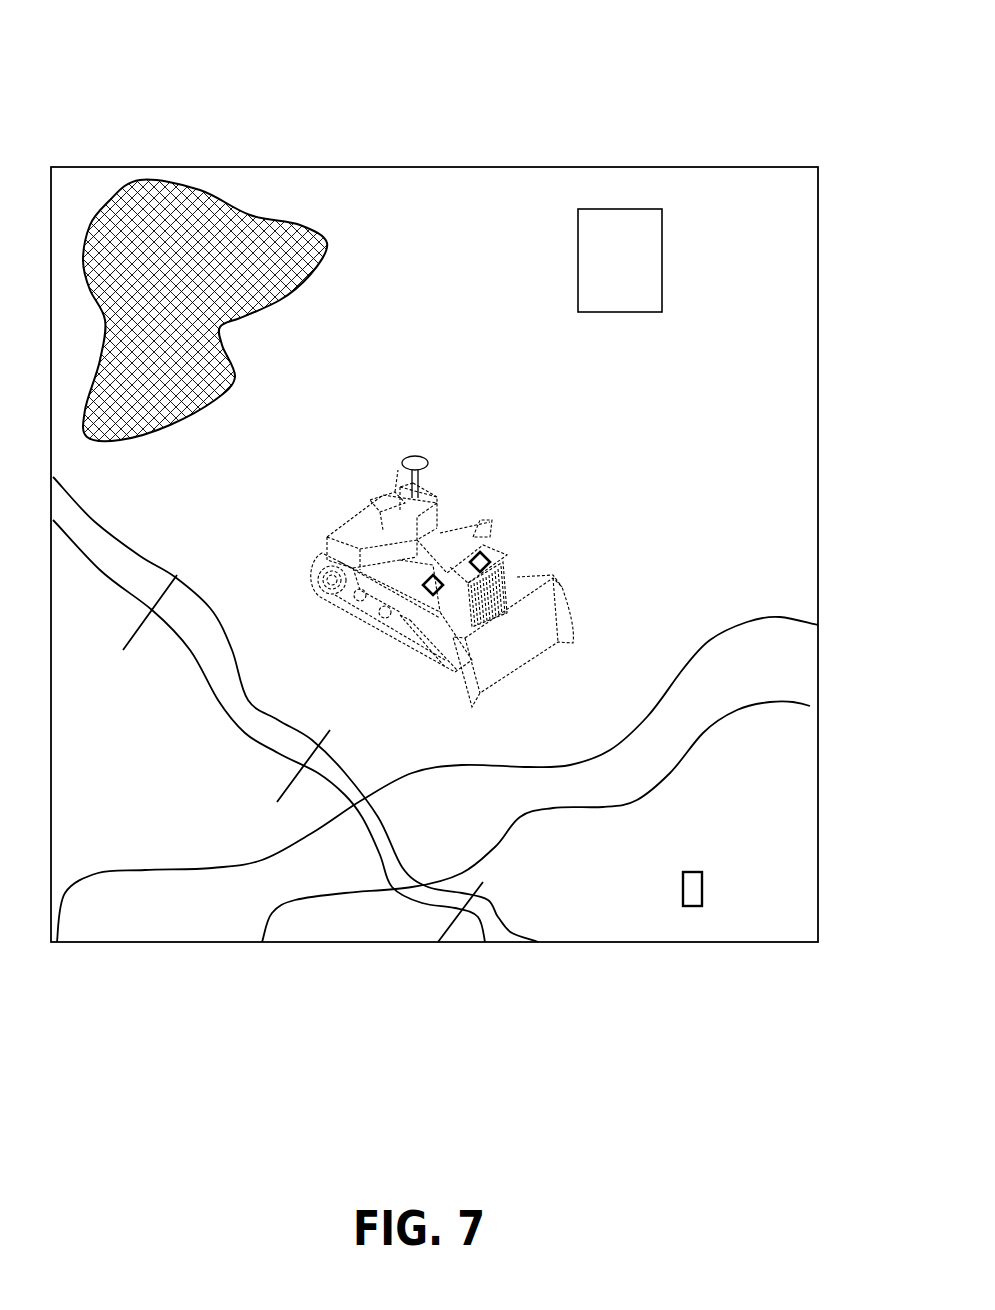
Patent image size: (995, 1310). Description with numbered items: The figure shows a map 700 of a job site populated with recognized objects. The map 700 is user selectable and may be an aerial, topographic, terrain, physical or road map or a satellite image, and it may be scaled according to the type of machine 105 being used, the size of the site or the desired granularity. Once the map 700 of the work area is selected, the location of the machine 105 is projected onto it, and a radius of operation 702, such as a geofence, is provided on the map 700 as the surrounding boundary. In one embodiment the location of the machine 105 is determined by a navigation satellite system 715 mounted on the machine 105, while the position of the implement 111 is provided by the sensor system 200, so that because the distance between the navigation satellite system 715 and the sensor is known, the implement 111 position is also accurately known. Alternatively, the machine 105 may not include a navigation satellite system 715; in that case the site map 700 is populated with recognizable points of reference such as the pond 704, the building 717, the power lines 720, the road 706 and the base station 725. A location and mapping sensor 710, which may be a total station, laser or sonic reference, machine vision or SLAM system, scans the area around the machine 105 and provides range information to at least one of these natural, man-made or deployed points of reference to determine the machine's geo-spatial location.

The map 700 is at (234, 30).
The radius of operation 702 is at (818, 465).
The pond 704 is at (205, 311).
The road 706 is at (437, 779).
The building 717 is at (662, 237).
The power lines 720 is at (193, 668).
The base station 725 is at (672, 882).
The machine 105 is at (363, 508).
The implement 111 is at (505, 660).
The navigation satellite system 715 is at (427, 460).
The location and mapping sensor 710 is at (488, 555).
The system 200 is at (428, 595).